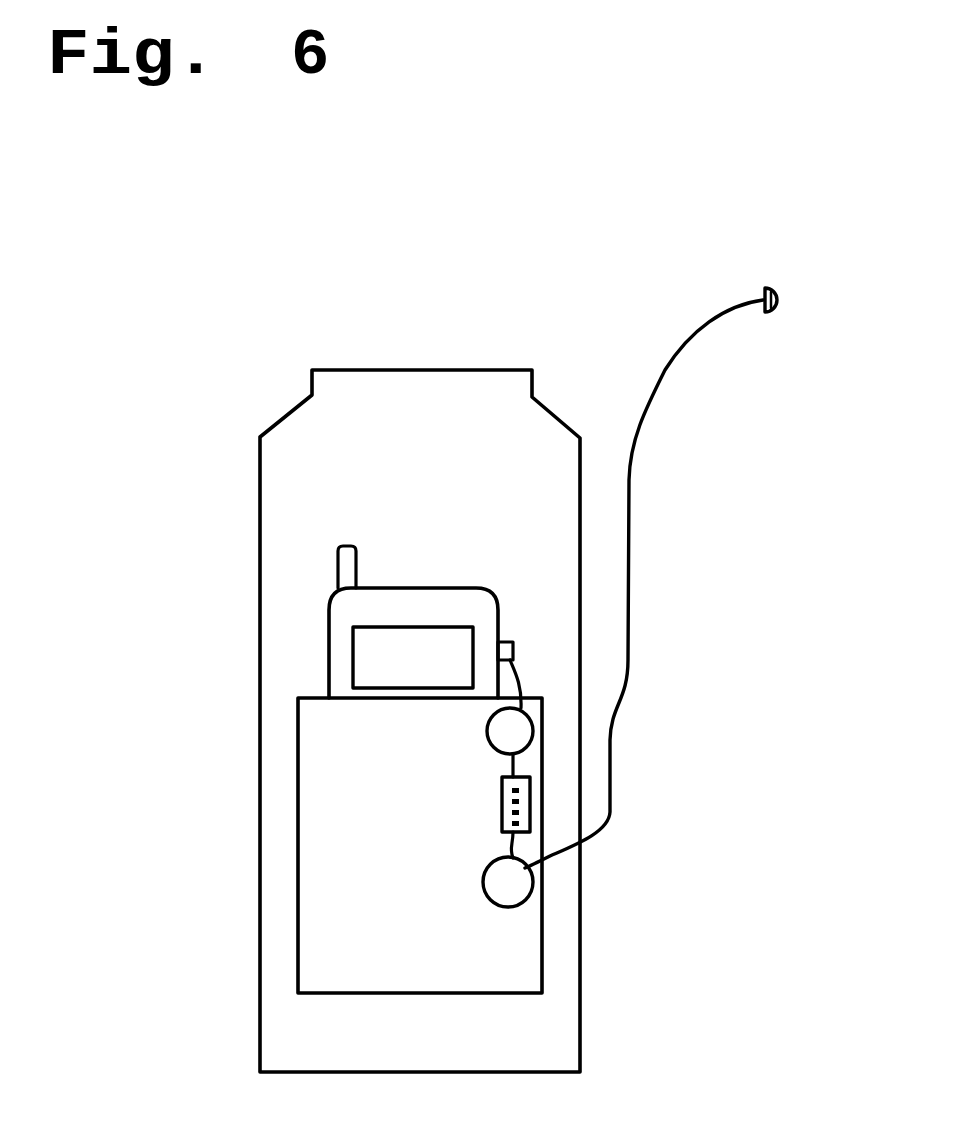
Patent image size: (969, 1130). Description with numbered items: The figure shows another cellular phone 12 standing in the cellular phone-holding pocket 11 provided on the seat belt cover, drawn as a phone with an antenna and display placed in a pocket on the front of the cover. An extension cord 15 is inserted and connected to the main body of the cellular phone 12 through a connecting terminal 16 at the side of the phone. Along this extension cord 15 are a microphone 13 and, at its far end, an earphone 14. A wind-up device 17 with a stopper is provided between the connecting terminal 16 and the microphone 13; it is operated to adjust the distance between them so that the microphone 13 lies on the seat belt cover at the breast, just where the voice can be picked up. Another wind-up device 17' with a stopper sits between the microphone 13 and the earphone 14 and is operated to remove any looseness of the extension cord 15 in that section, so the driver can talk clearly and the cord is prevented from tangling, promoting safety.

The pocket 11 is at (320, 895).
The cellular phone 12 is at (329, 633).
The microphone 13 is at (502, 800).
The earphone 14 is at (790, 297).
The extension cord 15 is at (628, 568).
The connecting terminal 16 is at (513, 650).
The wind-up device with a stopper 17 is at (606, 735).
The wind-up device with a stopper 17' is at (594, 891).